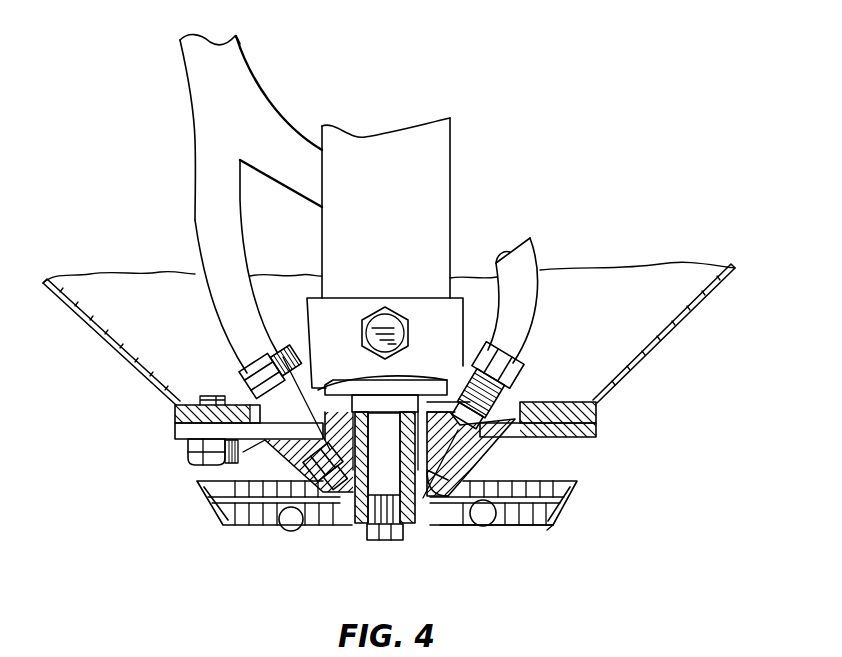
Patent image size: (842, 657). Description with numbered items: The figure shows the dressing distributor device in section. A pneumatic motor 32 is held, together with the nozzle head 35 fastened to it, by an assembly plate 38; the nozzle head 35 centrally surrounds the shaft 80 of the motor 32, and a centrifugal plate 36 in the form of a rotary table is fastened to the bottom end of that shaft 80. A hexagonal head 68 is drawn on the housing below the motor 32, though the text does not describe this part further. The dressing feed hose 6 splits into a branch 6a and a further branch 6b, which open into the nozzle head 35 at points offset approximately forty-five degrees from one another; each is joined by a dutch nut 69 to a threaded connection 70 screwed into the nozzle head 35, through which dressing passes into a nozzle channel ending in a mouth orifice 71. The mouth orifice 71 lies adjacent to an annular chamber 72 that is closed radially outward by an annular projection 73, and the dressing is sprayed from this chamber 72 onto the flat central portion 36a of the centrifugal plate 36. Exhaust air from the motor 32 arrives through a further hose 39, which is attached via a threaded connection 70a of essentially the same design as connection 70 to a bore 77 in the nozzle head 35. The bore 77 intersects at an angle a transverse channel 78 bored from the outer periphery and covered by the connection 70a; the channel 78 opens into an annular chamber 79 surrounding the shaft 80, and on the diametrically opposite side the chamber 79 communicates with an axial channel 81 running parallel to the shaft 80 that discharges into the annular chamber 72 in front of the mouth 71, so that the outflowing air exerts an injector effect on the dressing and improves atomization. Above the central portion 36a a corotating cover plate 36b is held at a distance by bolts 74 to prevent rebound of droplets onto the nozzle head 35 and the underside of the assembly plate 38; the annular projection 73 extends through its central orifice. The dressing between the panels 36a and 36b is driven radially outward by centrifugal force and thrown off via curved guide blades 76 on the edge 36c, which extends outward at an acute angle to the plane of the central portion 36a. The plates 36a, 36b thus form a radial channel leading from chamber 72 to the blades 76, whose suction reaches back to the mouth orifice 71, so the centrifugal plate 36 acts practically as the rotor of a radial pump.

The dressing feed hose 6 is at (232, 58).
The branch of hose 6a is at (218, 175).
The further branch of hose 6b is at (290, 150).
The pneumatic motor 32 is at (437, 148).
The nozzle head 35 is at (188, 452).
The centrifugal plate 36 is at (575, 498).
The flat central portion 36a is at (540, 527).
The corotating cover plate 36b is at (557, 480).
The edge of centrifugal plate 36c is at (553, 528).
The assembly plate 38 is at (178, 412).
The exhaust-air hose 39 is at (530, 268).
The hex bolt head 68 is at (388, 330).
The dutch nut 69 is at (262, 365).
The threaded connection 70 is at (293, 402).
The threaded connection 70a is at (512, 395).
The mouth orifice 71 is at (345, 487).
The annular chamber 72 is at (347, 497).
The annular projection 73 is at (450, 518).
The bolts 74 is at (288, 513).
The curved guide blades 76 is at (238, 483).
The bore 77 is at (478, 430).
The transverse channel 78 is at (510, 432).
The annular chamber 79 is at (347, 397).
The shaft 80 is at (407, 400).
The axial channel 81 is at (300, 468).